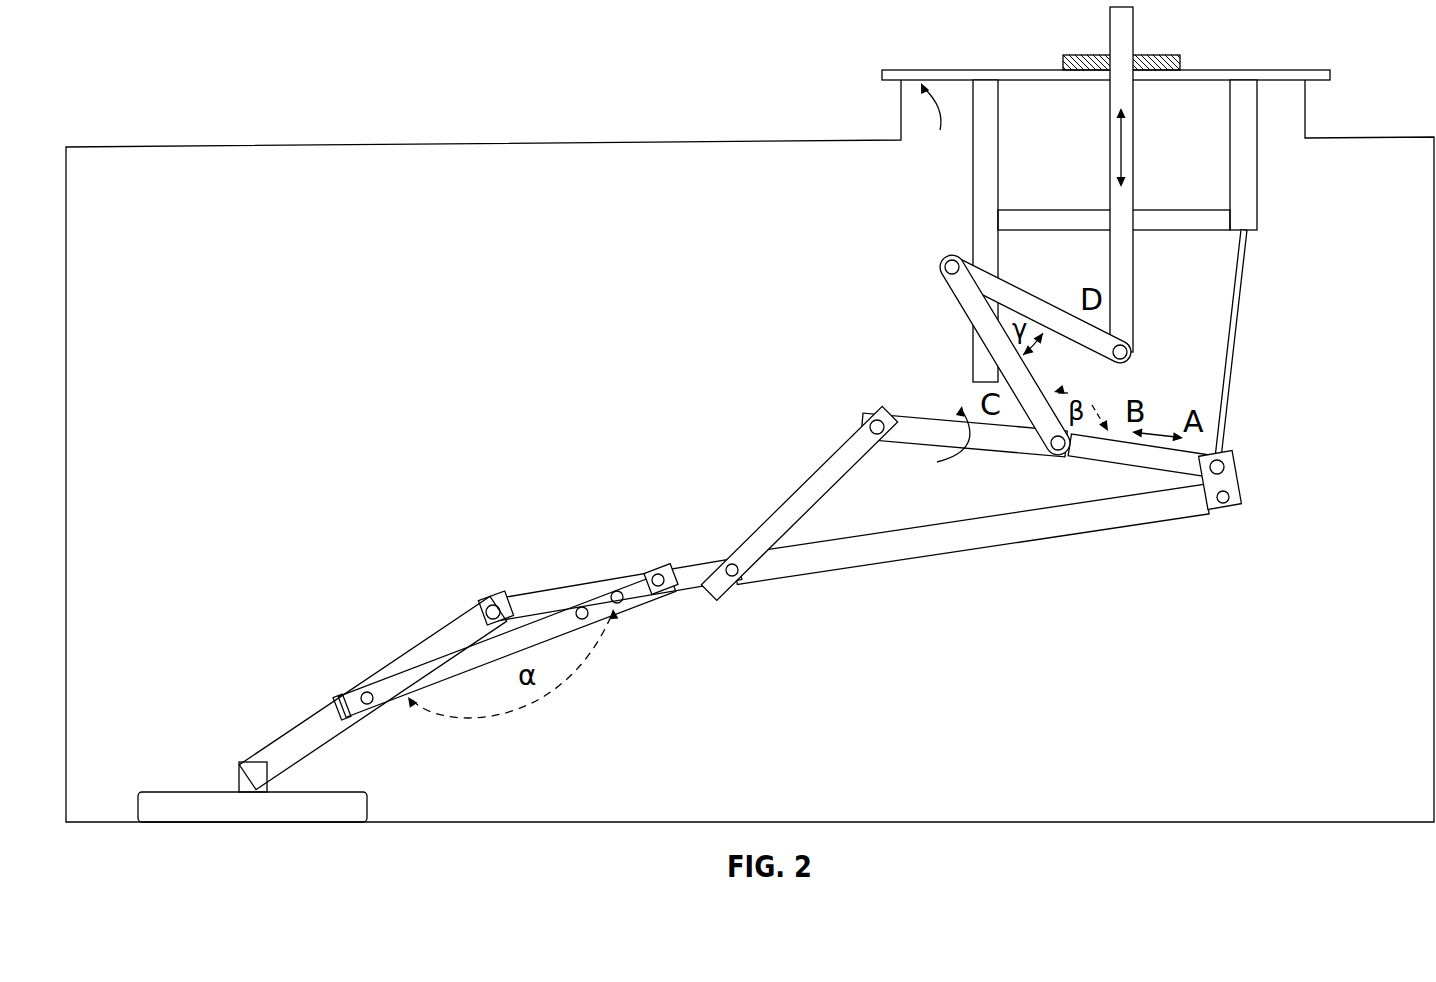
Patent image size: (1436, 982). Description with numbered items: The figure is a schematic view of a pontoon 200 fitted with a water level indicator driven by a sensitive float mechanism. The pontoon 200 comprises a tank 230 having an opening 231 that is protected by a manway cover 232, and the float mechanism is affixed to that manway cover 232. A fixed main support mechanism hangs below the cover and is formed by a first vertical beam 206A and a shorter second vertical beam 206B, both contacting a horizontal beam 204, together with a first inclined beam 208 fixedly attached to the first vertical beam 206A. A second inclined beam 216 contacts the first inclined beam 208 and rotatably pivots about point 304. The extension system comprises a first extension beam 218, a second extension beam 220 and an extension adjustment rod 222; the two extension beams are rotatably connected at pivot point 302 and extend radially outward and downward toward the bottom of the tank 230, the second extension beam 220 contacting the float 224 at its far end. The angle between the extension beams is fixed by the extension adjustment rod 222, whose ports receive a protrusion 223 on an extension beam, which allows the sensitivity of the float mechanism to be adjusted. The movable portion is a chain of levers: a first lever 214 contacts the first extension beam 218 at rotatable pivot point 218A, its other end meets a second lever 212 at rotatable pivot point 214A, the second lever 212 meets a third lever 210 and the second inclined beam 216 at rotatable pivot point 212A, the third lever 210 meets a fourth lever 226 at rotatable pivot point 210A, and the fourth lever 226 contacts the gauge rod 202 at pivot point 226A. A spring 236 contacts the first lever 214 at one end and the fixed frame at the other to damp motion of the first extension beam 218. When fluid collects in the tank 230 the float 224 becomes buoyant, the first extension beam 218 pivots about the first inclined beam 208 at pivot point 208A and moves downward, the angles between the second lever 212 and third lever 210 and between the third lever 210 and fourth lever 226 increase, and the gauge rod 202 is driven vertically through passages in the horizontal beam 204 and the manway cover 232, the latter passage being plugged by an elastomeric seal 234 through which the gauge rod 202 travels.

The pontoon 200 is at (270, 66).
The gauge rod 202 is at (1125, 32).
The horizontal beam 204 is at (1060, 215).
The first vertical beam 206A is at (972, 183).
The second vertical beam 206B is at (1245, 190).
The first inclined beam 208 is at (797, 492).
The pivot point 208A is at (740, 583).
The third lever 210 is at (948, 290).
The rotatable pivot point 210A is at (945, 265).
The second lever 212 is at (1140, 455).
The rotatable pivot point 212A is at (1045, 452).
The first lever 214 is at (1225, 460).
The rotatable pivot point 214A is at (1232, 470).
The second inclined beam 216 is at (930, 445).
The first extension beam 218 is at (880, 550).
The rotatable pivot point 218A is at (1218, 502).
The second extension beam 220 is at (437, 633).
The extension adjustment rod 222 is at (655, 600).
The protrusion 223 is at (655, 568).
The float 224 is at (368, 795).
The fourth lever 226 is at (1047, 295).
The pivot point 226A is at (1128, 348).
The tank 230 is at (376, 146).
The opening 231 is at (942, 124).
The manway cover 232 is at (1290, 72).
The seal 234 is at (1060, 60).
The spring 236 is at (1240, 305).
The pivot point 302 is at (493, 600).
The pivot point 304 is at (870, 418).